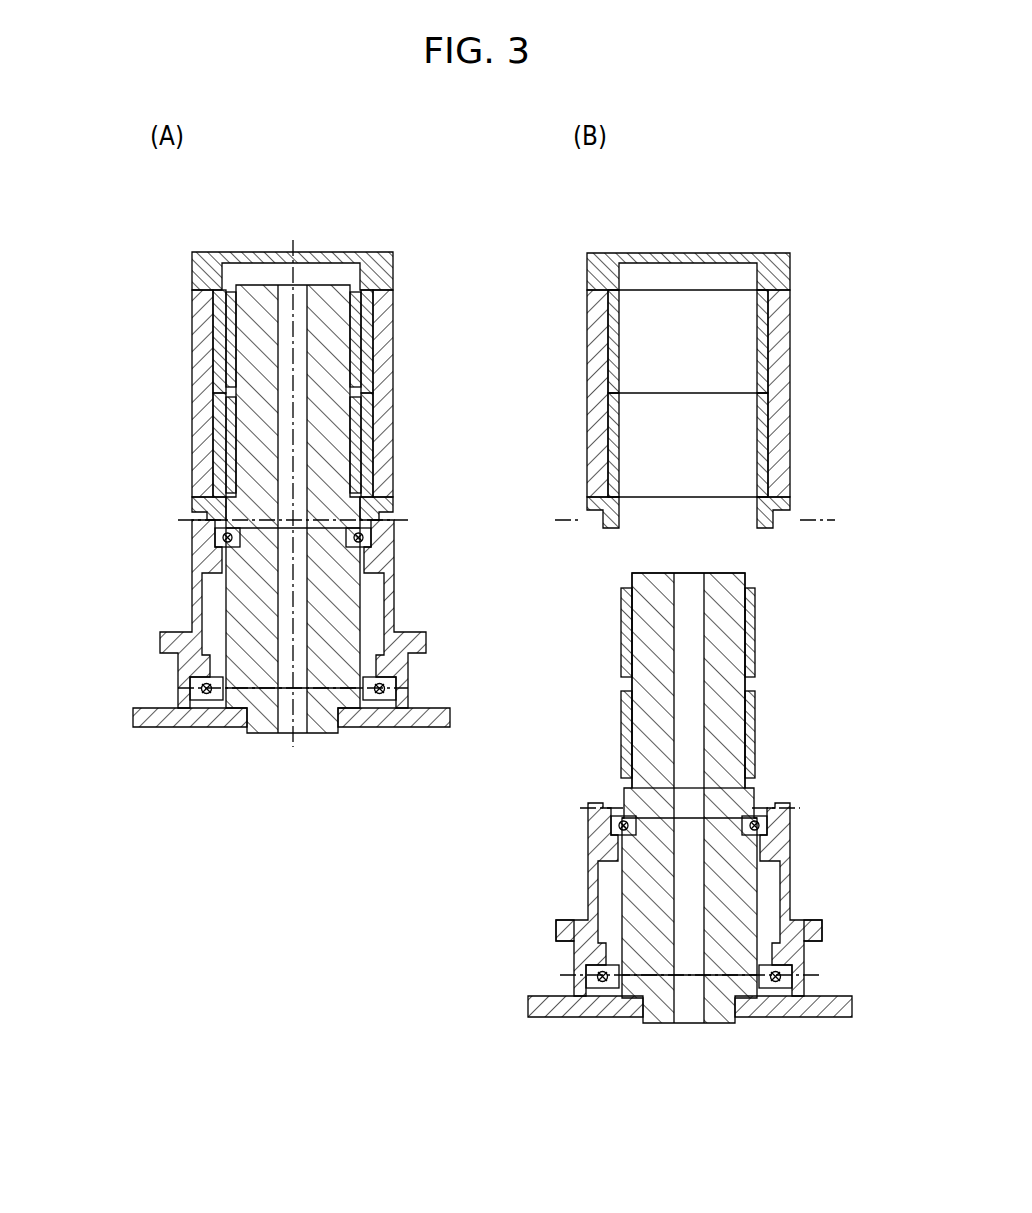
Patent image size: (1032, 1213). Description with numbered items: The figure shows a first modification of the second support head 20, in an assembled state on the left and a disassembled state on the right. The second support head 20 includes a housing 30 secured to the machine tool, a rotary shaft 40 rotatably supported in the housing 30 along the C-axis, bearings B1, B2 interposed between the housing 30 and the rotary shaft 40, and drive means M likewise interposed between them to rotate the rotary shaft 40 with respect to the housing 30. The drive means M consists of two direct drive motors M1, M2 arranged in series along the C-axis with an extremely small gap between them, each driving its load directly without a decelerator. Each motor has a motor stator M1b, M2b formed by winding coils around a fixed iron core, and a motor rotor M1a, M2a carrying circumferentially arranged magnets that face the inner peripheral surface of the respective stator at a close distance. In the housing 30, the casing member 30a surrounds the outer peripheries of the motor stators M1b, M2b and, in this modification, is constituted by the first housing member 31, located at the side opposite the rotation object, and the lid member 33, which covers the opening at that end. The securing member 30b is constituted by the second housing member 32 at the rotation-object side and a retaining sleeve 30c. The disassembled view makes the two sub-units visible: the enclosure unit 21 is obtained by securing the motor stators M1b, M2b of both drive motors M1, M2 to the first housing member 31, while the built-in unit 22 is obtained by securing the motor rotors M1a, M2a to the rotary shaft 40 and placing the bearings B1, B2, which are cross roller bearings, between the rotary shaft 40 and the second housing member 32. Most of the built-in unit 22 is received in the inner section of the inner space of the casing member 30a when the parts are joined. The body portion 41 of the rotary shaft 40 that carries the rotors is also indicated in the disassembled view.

The second support head 20 is at (374, 211).
The housing 30 is at (192, 302).
The drive means M is at (220, 443).
The first drive motor M1 is at (372, 348).
The second drive motor M2 is at (372, 465).
The rotary shaft 40 is at (222, 600).
The enclosure unit 21 is at (580, 377).
The lid member 33 is at (637, 253).
The first housing member 31 is at (588, 305).
The casing member 30a is at (583, 472).
The motor stator of first drive motor M1b is at (765, 332).
The motor stator of second drive motor M2b is at (765, 475).
The built-in unit 22 is at (607, 787).
The shaft body 41 is at (737, 647).
The motor rotor of first drive motor M1a is at (623, 620).
The motor rotor of second drive motor M2a is at (623, 715).
The securing member 30b is at (587, 882).
The second housing member 32 is at (597, 917).
The bearing B1 is at (620, 825).
The bearing B2 is at (593, 978).
The retaining sleeve 30c is at (575, 992).